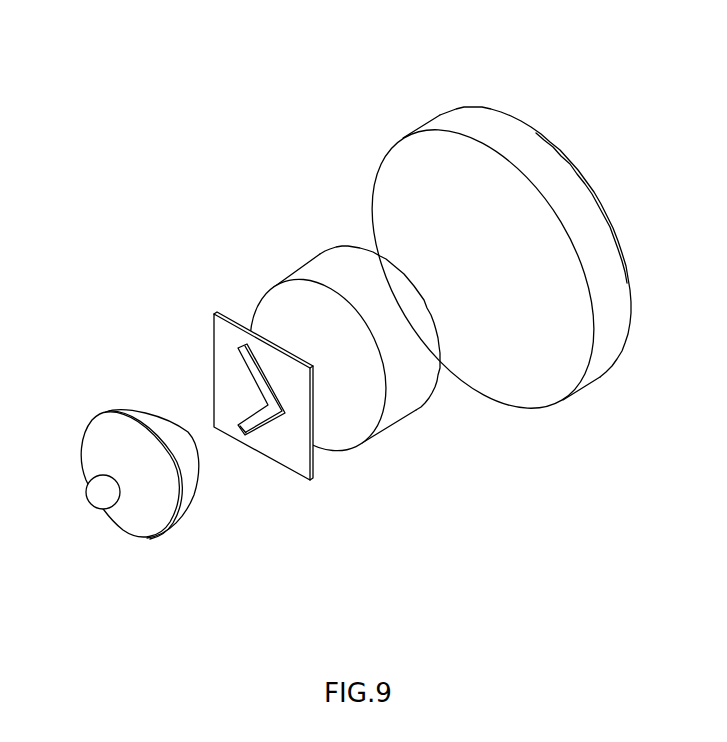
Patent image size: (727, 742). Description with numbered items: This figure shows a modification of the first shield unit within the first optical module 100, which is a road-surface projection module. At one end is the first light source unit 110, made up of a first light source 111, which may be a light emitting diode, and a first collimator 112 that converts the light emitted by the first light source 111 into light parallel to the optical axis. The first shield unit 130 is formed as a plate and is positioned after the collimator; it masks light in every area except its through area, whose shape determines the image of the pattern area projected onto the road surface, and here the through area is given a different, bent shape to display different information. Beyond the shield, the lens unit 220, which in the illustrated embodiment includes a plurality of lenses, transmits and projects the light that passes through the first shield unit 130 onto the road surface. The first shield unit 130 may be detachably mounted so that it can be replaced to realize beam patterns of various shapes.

The first optical module 100 is at (195, 60).
The first light source unit 110 is at (130, 357).
The first light source 111 is at (88, 492).
The first collimator 112 is at (120, 427).
The first shield unit 130 is at (222, 312).
The second lens unit 220 is at (328, 260).